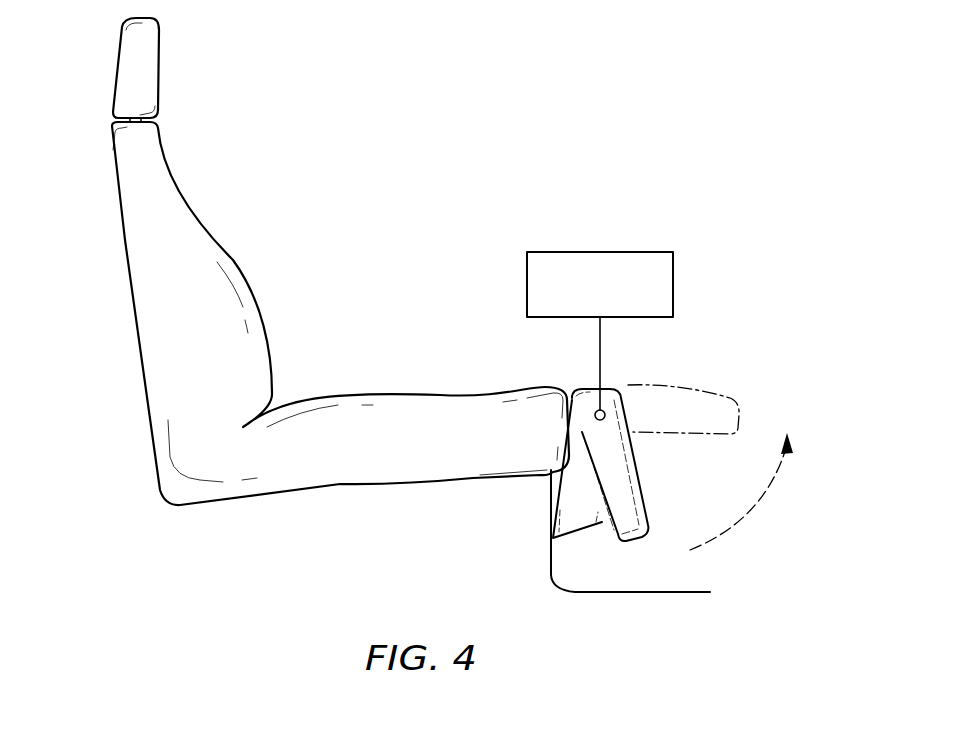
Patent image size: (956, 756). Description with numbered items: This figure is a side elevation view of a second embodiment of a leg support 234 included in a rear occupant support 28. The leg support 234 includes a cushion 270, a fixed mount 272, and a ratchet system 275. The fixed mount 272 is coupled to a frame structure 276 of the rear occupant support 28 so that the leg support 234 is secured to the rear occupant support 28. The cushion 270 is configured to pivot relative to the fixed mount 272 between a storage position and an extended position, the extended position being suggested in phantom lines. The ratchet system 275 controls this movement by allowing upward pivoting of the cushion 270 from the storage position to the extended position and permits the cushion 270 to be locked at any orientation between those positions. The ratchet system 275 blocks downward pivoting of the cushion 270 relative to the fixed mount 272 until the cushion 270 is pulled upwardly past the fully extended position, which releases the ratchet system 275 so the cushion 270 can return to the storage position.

The rear occupant support 28 is at (76, 180).
The leg support 234 is at (647, 408).
The cushion 270 is at (628, 483).
The fixed mount 272 is at (575, 488).
The ratchet system 275 is at (600, 252).
The frame structure 276 is at (552, 557).